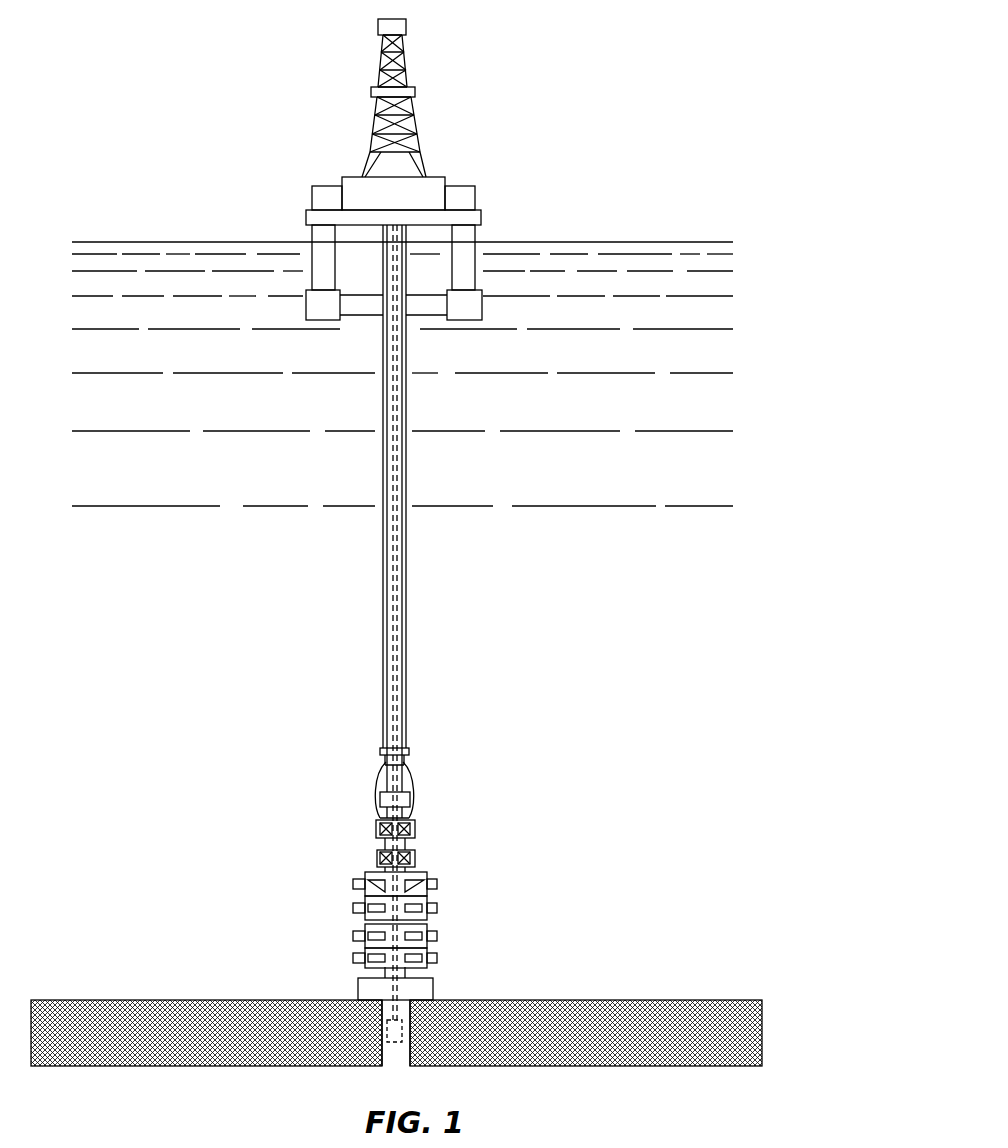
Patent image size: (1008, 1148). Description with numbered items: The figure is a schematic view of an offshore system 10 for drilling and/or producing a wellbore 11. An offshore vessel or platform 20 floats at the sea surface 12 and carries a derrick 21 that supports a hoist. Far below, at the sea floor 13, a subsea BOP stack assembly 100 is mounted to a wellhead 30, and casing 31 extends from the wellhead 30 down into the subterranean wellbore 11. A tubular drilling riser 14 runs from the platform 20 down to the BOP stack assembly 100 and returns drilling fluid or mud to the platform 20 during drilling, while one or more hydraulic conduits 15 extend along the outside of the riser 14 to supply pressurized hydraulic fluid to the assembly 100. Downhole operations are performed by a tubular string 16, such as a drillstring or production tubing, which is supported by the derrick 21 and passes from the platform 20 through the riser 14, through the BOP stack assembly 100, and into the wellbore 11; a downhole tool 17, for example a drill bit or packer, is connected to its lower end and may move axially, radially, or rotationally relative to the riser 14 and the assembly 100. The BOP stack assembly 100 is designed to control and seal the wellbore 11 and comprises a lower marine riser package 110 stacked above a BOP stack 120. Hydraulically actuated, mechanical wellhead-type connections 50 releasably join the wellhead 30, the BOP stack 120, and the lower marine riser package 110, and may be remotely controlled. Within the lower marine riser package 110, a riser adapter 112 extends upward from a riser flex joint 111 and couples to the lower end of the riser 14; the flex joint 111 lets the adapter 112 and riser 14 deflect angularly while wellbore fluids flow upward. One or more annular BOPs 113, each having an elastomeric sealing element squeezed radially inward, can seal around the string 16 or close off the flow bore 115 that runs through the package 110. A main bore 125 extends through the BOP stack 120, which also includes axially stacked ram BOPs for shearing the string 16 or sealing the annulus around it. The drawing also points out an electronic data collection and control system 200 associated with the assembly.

The offshore system 10 is at (626, 59).
The wellbore 11 is at (380, 1028).
The sea surface 12 is at (643, 239).
The sea floor 13 is at (688, 1000).
The drilling riser 14 is at (405, 475).
The hydraulic conduit 15 is at (407, 412).
The tubular string 16 is at (398, 670).
The downhole tool 17 is at (398, 1042).
The offshore vessel or platform 20 is at (437, 178).
The derrick 21 is at (405, 68).
The wellhead 30 is at (438, 990).
The casing 31 is at (407, 1047).
The hydraulically actuated mechanical wellhead-type connection 50 is at (410, 845).
The subsea BOP stack assembly 100 is at (246, 834).
The lower marine riser package 110 is at (434, 822).
The riser flex joint 111 is at (405, 800).
The riser adapter 112 is at (405, 770).
The annular BOP 113 is at (378, 858).
The flow bore 115 is at (383, 799).
The BOP stack 120 is at (332, 925).
The main bore 125 is at (384, 889).
The control system 200 is at (533, 822).